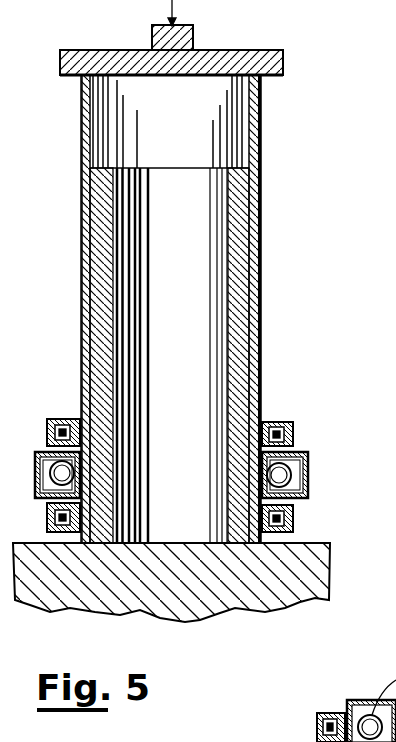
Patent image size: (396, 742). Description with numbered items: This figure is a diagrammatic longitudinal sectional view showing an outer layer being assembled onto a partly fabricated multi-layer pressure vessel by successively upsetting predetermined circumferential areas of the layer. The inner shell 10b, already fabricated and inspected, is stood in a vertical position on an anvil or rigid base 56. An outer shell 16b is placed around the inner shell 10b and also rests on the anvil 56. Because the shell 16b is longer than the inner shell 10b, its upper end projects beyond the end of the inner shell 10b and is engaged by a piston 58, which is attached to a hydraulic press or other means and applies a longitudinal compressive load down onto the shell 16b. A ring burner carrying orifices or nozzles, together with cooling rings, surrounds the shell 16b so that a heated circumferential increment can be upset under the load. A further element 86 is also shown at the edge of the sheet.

The piston 58 is at (270, 38).
The shell 16b is at (260, 301).
The inner shell 10b is at (104, 461).
The anvil 56 is at (166, 548).
The clamp block 86 is at (318, 727).